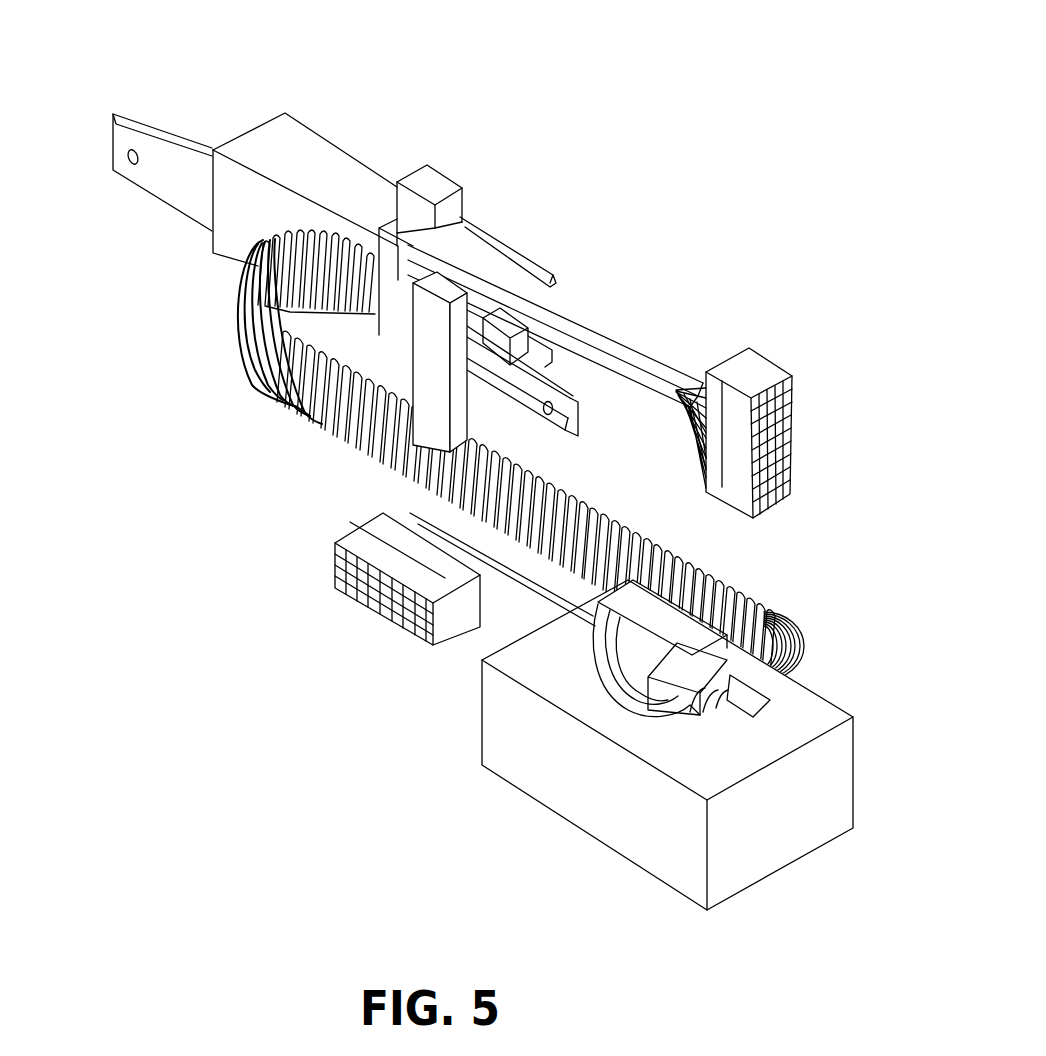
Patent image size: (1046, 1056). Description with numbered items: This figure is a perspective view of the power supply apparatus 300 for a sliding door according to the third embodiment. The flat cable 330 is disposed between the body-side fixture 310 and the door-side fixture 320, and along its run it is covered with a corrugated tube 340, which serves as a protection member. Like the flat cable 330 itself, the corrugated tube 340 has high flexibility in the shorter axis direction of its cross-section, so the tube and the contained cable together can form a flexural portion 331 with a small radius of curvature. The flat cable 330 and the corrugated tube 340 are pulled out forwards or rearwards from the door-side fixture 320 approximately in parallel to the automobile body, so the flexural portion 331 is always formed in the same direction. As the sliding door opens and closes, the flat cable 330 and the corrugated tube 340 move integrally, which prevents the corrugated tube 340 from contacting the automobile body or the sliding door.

The power supply apparatus for a sliding door 300 is at (704, 97).
The body-side fixture 310 is at (590, 785).
The door-side fixture 320 is at (338, 159).
The flat cable 330 is at (587, 330).
The flexural portion 331 is at (237, 297).
The corrugated tube 340 is at (297, 415).